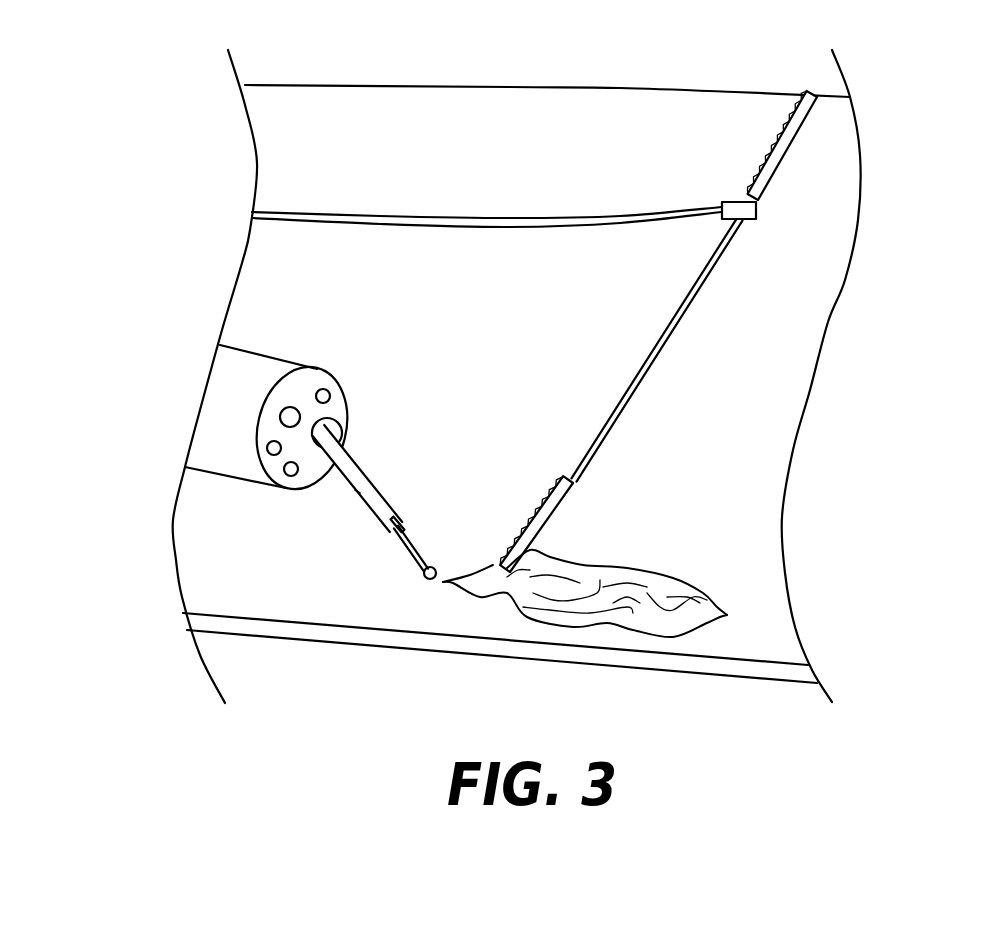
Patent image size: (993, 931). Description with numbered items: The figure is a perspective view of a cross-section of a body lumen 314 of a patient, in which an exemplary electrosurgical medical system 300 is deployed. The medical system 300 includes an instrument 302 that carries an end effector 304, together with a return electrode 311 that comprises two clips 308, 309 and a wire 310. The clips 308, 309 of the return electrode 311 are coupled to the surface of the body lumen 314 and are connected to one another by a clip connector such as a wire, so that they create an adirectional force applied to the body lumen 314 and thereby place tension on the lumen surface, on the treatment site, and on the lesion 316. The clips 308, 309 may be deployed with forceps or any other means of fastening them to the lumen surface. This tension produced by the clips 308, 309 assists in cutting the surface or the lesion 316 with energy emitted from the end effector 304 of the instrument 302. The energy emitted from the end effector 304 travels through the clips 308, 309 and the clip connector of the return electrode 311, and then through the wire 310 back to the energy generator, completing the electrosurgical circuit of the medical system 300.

The medical system 300 is at (186, 141).
The instrument 302 is at (352, 497).
The end effector 304 is at (418, 562).
The clip 308 is at (770, 138).
The clip 309 is at (538, 532).
The wire 310 is at (311, 210).
The return electrode 311 is at (720, 262).
The body lumen 314 is at (829, 403).
The lesion 316 is at (687, 607).